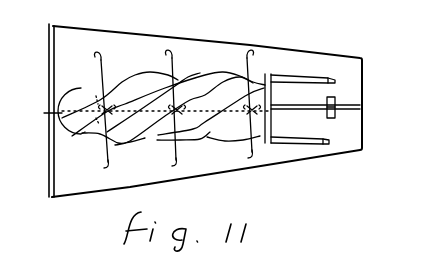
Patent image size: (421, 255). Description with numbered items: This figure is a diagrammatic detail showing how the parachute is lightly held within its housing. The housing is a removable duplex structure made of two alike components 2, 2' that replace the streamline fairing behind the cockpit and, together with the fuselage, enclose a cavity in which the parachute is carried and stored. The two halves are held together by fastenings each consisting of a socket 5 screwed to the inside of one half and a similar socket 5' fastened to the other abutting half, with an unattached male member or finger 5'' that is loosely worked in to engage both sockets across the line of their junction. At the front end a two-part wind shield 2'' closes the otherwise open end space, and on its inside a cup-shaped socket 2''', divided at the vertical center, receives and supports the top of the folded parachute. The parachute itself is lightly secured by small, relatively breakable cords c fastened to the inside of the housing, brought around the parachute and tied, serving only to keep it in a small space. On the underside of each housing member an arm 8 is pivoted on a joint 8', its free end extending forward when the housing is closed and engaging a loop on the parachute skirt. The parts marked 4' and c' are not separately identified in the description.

The housing component 2 is at (207, 111).
The housing component 2' is at (163, 121).
The wind shield 2'' is at (34, 110).
The cup-shaped socket 2''' is at (44, 123).
The pin 4' is at (94, 113).
The socket 5 is at (315, 103).
The socket 5' is at (319, 115).
The finger 5'' is at (77, 113).
The arm 8 is at (296, 107).
The joint 8' is at (336, 110).
The cord c is at (194, 110).
The rod hook end c' is at (176, 111).